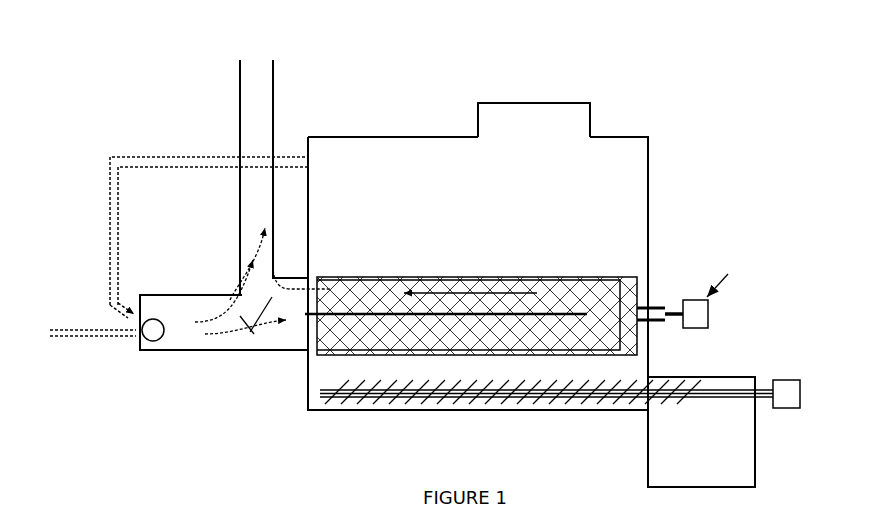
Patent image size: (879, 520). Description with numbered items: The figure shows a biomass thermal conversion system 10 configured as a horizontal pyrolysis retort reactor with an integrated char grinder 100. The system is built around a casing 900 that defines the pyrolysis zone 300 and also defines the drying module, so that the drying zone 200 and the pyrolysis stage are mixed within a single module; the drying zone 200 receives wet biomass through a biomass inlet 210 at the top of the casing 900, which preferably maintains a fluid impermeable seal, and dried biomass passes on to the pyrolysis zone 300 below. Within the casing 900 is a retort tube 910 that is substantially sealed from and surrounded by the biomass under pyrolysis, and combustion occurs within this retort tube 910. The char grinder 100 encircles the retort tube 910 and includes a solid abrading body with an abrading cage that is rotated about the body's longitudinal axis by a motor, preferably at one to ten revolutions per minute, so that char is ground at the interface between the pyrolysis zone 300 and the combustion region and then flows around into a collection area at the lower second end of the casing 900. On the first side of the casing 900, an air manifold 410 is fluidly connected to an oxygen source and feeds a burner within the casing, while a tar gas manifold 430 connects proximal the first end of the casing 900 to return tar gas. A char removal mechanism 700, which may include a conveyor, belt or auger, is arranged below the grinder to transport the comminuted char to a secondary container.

The biomass thermal conversion system 10 is at (118, 68).
The char grinder 100 is at (596, 274).
The drying zone 200 is at (463, 190).
The biomass inlet 210 is at (558, 98).
The pyrolysis zone 300 is at (477, 292).
The air manifold 410 is at (88, 322).
The tar gas manifold 430 is at (101, 217).
The char removal mechanism 700 is at (306, 399).
The casing 900 is at (651, 146).
The retort tube 910 is at (598, 353).